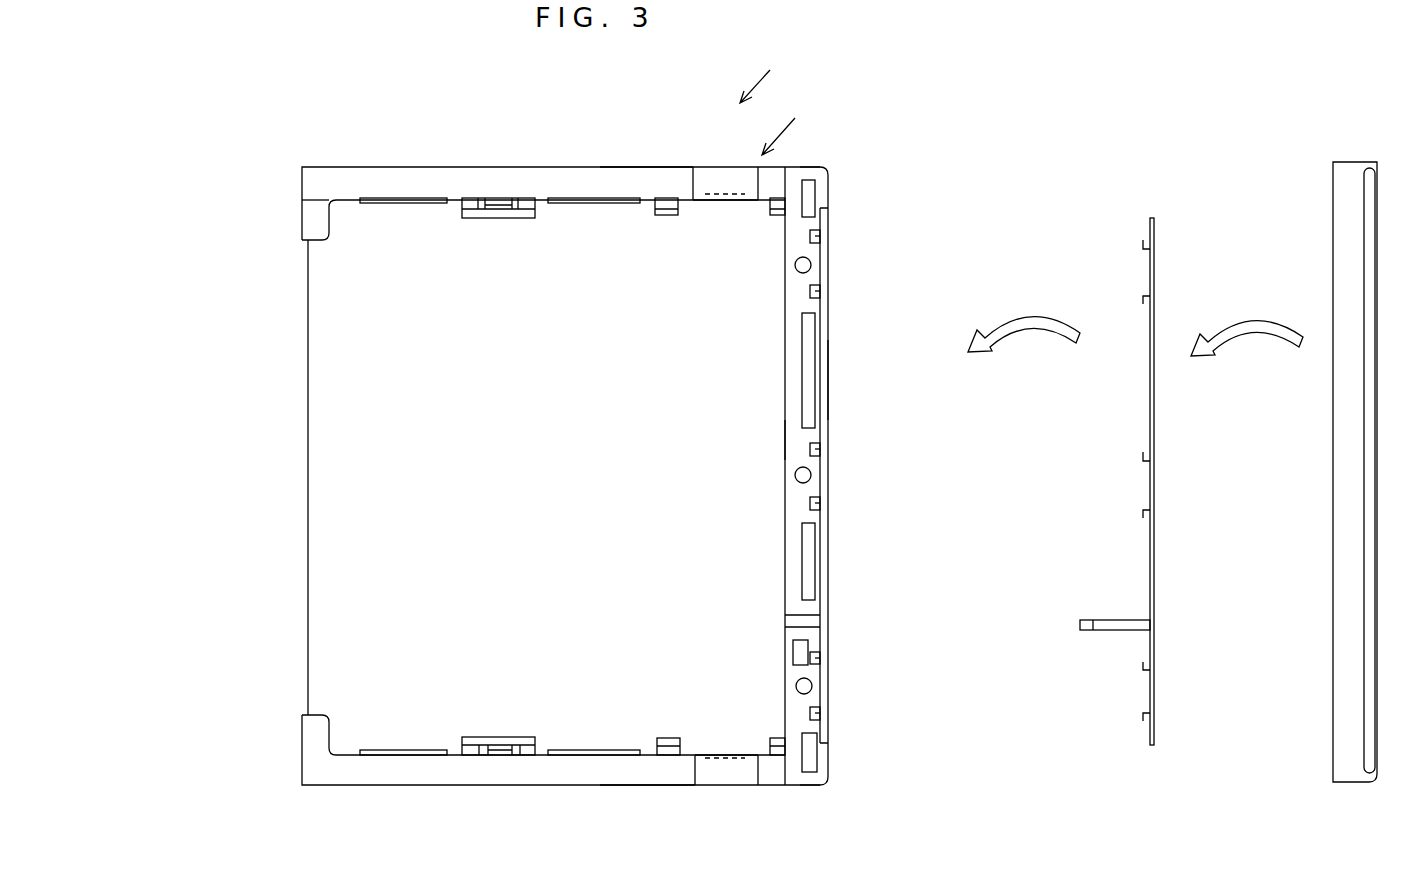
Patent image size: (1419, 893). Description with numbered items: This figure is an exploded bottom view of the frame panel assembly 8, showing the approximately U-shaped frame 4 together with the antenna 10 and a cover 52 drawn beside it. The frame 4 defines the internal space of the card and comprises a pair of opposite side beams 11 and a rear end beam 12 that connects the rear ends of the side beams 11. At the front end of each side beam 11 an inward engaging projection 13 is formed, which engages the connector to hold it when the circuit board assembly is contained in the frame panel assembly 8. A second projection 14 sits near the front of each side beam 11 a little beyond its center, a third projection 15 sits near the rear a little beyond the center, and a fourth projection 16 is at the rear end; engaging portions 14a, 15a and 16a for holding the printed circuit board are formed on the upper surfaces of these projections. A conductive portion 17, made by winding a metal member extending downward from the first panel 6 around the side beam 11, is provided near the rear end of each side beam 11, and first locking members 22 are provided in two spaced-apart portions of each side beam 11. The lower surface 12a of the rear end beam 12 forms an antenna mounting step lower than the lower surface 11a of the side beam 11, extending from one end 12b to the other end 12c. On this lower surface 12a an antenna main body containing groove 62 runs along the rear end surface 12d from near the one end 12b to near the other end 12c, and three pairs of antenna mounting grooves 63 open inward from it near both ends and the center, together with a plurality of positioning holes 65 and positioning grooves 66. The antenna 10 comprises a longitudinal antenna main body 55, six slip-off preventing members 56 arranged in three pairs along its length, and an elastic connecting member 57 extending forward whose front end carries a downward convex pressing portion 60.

The frame 4 is at (787, 121).
The first panel 6 is at (315, 465).
The frame panel assembly 8 is at (763, 69).
The antenna 10 is at (1122, 424).
The side beam 11 is at (580, 165).
The lower surface of the side beam 11a is at (638, 170).
The rear end beam 12 is at (797, 175).
The lower surface of the rear end beam 12a is at (787, 438).
The one end of the rear end beam 12b is at (800, 790).
The other end of the rear end beam 12c is at (820, 168).
The rear end surface 12d is at (830, 400).
The engaging projection 13 is at (312, 205).
The second projection 14 is at (478, 218).
The engaging portion 14a is at (518, 220).
The third projection 15 is at (667, 215).
The engaging portion 15a is at (662, 215).
The fourth projection 16 is at (780, 216).
The engaging portion 16a is at (762, 210).
The conductive portion 17 is at (707, 197).
The first locking member 22 is at (395, 200).
The cover 52 is at (1350, 172).
The antenna main body 55 is at (1154, 578).
The slip-off preventing member 56 is at (1143, 300).
The connecting member 57 is at (1115, 620).
The pressing portion 60 is at (1084, 620).
The antenna main body containing groove 62 is at (830, 360).
The antenna mounting groove 63 is at (818, 237).
The positioning hole 65 is at (811, 265).
The positioning groove 66 is at (815, 195).